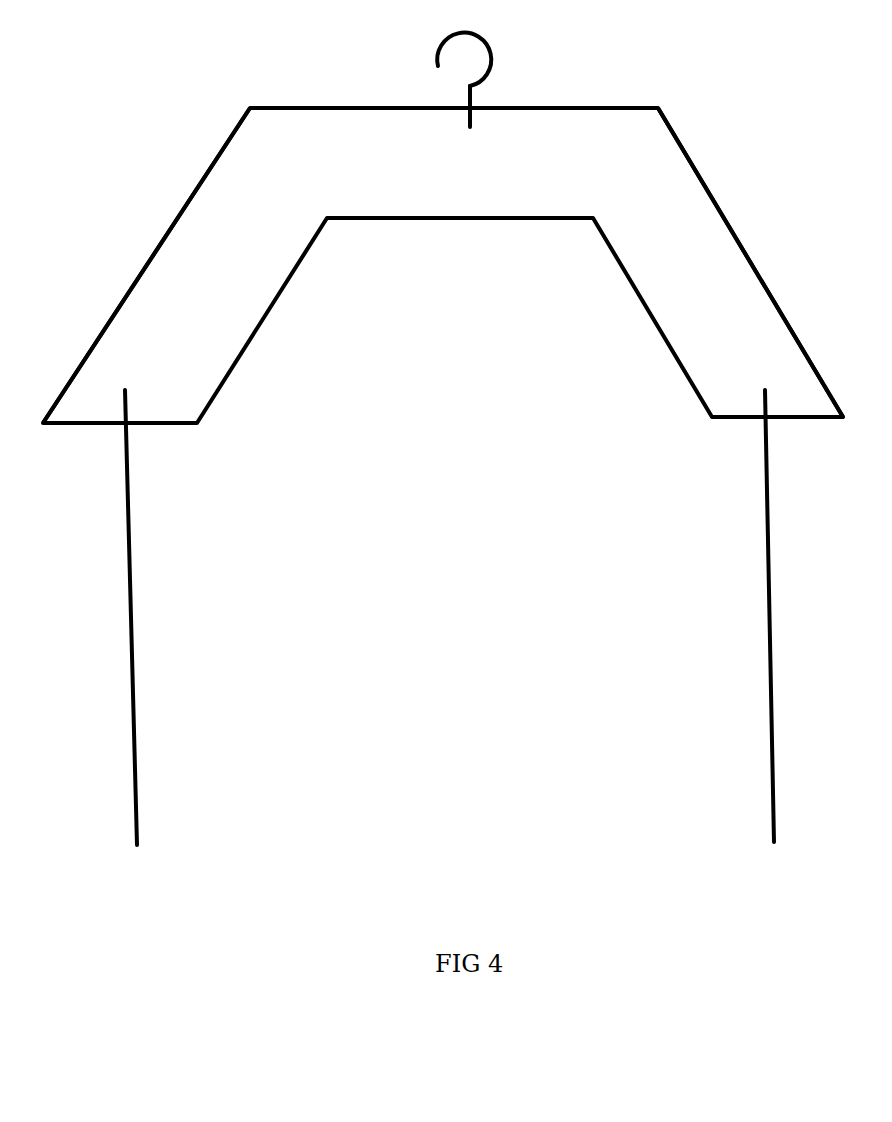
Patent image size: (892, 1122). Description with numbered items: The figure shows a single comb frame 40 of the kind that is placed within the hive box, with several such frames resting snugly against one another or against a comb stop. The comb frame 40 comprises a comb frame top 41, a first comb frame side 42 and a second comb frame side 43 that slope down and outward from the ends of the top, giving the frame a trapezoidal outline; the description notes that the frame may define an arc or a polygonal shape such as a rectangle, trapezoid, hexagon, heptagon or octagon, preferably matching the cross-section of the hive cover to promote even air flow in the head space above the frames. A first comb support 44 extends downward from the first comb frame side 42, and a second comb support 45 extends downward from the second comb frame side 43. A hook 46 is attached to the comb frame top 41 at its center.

The comb frame 40 is at (443, 265).
The comb frame top 41 is at (335, 152).
The first comb frame side 42 is at (167, 300).
The second comb frame side 43 is at (683, 285).
The first comb support 44 is at (115, 610).
The second comb support 45 is at (775, 678).
The hook 46 is at (478, 90).